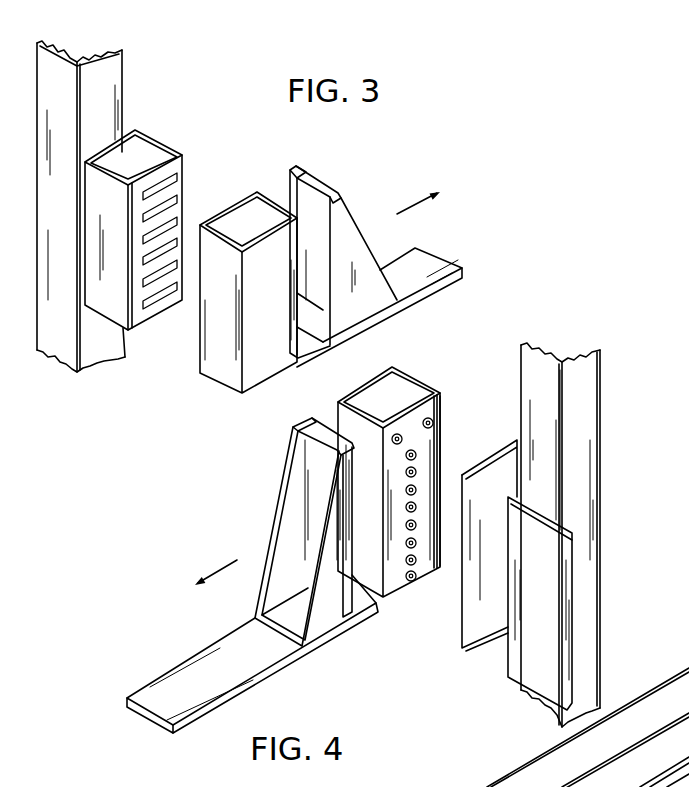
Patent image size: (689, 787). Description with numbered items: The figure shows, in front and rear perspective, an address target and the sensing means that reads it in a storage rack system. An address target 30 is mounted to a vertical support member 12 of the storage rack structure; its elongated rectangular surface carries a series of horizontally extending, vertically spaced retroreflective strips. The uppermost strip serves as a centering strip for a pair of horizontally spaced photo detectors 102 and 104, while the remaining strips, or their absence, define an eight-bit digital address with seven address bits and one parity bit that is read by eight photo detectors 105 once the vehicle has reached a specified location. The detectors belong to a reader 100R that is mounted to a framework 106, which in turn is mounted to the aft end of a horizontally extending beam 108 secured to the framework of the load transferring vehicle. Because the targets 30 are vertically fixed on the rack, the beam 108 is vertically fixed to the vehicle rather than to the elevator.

In FIG. 3, the vertical support member 12 is at (117, 73).
In FIG. 4, the vertical support member 12 is at (591, 445).
In FIG. 3, the address target 30 is at (160, 150).
In FIG. 4, the address target 30 is at (488, 670).
In FIG. 3, the reader 100R is at (200, 373).
In FIG. 4, the reader 100R is at (393, 605).
In FIG. 4, the photo detector 102 is at (399, 435).
In FIG. 4, the photo detector 104 is at (442, 419).
In FIG. 4, the photo detectors 105 is at (416, 468).
In FIG. 3, the framework 106 is at (342, 215).
In FIG. 4, the framework 106 is at (291, 533).
In FIG. 3, the beam 108 is at (427, 263).
In FIG. 4, the beam 108 is at (188, 683).